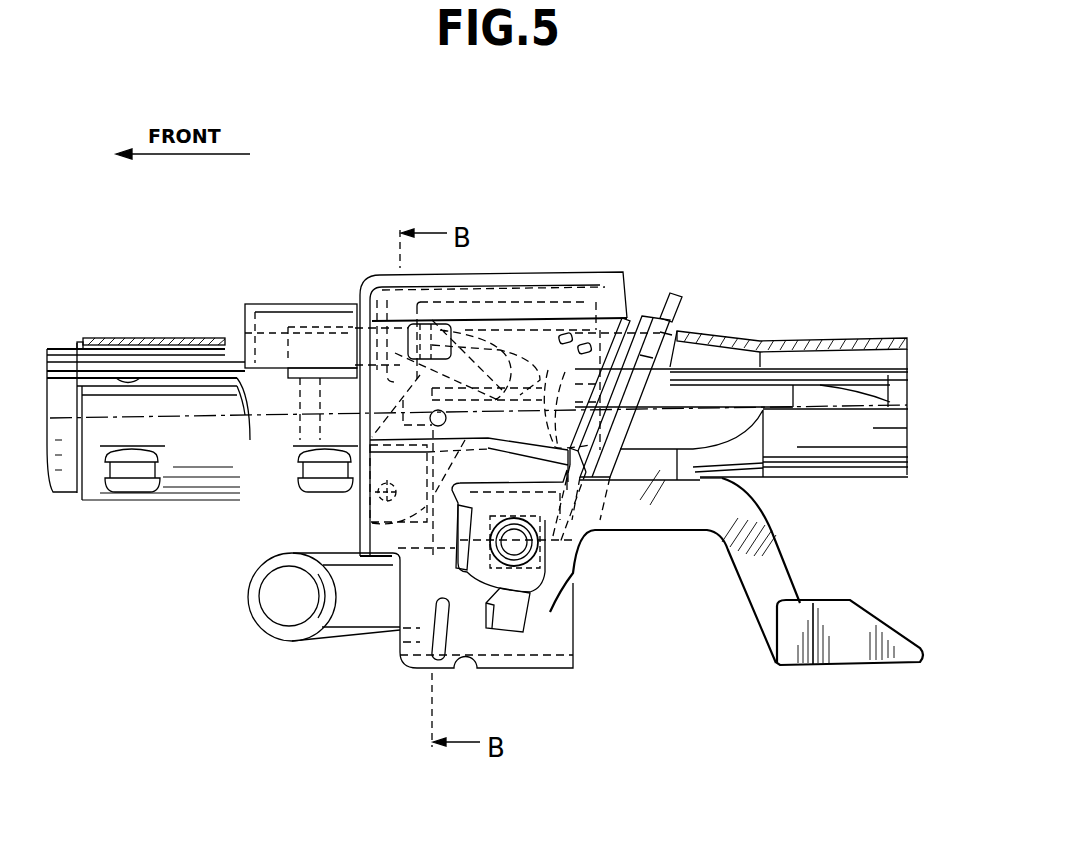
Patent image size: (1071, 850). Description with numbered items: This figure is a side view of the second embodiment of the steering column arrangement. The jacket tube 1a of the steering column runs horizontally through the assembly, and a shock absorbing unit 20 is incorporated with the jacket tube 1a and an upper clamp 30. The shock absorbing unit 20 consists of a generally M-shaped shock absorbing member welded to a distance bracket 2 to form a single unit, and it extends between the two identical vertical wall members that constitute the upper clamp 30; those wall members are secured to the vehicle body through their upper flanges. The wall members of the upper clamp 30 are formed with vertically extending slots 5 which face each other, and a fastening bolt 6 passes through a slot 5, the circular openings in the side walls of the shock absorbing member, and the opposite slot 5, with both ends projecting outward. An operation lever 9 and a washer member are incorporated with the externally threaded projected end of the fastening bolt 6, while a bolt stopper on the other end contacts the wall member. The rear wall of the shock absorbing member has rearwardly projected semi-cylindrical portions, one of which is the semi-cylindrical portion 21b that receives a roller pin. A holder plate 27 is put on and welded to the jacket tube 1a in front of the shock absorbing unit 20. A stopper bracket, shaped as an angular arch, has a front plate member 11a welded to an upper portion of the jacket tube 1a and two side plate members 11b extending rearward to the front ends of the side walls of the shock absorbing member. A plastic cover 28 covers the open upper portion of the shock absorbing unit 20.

The jacket tube 1a is at (768, 337).
The distance bracket 2 is at (543, 483).
The vertically extending slot 5 is at (497, 622).
The fastening bolt 6 is at (573, 585).
The operation lever 9 is at (757, 553).
The front plate member 11a is at (247, 307).
The side plate member 11b is at (318, 303).
The shock absorbing unit 20 is at (609, 383).
The semi-cylindrical portion 21b is at (630, 347).
The holder plate 27 is at (320, 372).
The plastic cover 28 is at (520, 287).
The upper clamp 30 is at (607, 270).